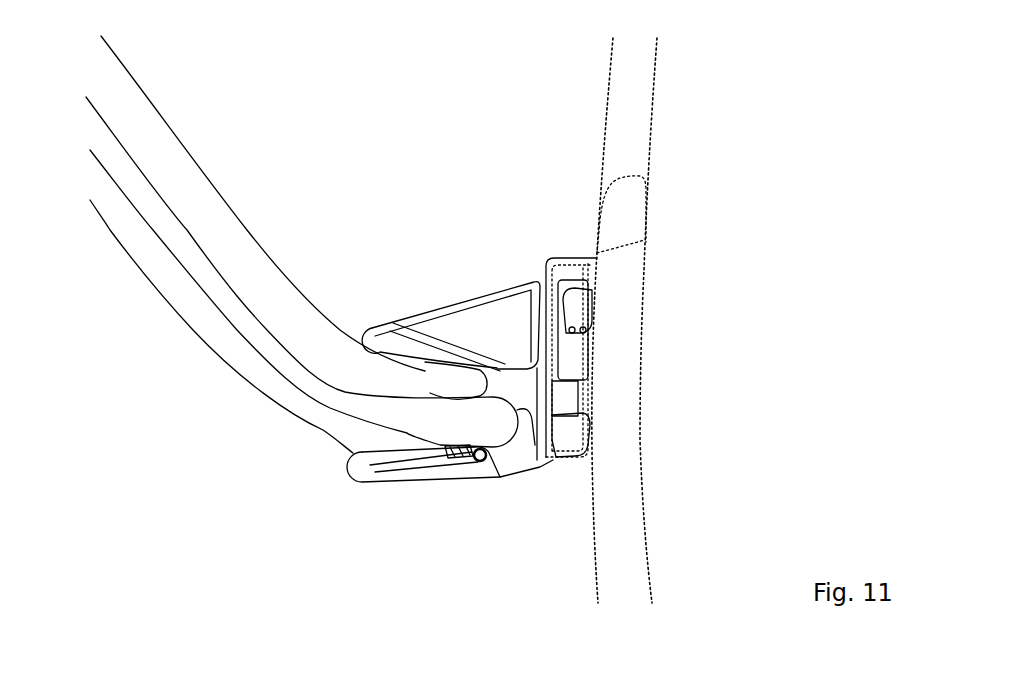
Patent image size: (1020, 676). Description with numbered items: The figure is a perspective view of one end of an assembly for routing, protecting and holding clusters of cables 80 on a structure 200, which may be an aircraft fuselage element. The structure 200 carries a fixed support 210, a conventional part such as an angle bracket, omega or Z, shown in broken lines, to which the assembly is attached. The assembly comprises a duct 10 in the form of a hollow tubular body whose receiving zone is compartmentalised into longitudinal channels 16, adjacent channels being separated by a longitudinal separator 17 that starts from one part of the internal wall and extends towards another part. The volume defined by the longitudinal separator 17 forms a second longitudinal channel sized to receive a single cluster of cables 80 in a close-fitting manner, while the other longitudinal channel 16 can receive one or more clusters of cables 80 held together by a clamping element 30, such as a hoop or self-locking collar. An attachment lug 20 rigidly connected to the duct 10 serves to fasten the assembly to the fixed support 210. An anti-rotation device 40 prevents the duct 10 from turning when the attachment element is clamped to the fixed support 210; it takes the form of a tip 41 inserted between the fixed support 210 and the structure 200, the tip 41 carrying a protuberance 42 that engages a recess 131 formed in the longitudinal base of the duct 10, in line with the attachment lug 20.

The duct 10 is at (450, 411).
The longitudinal channel 16 is at (365, 470).
The longitudinal separator 17 is at (481, 449).
The attachment lug 20 is at (532, 312).
The clamping element 30 is at (475, 380).
The anti-rotation device 40 is at (585, 441).
The tip 41 is at (575, 362).
The protuberance 42 is at (563, 404).
The cluster of cables 80 is at (182, 190).
The recess 131 is at (532, 412).
The structure 200 is at (603, 143).
The fixed support 210 is at (570, 250).